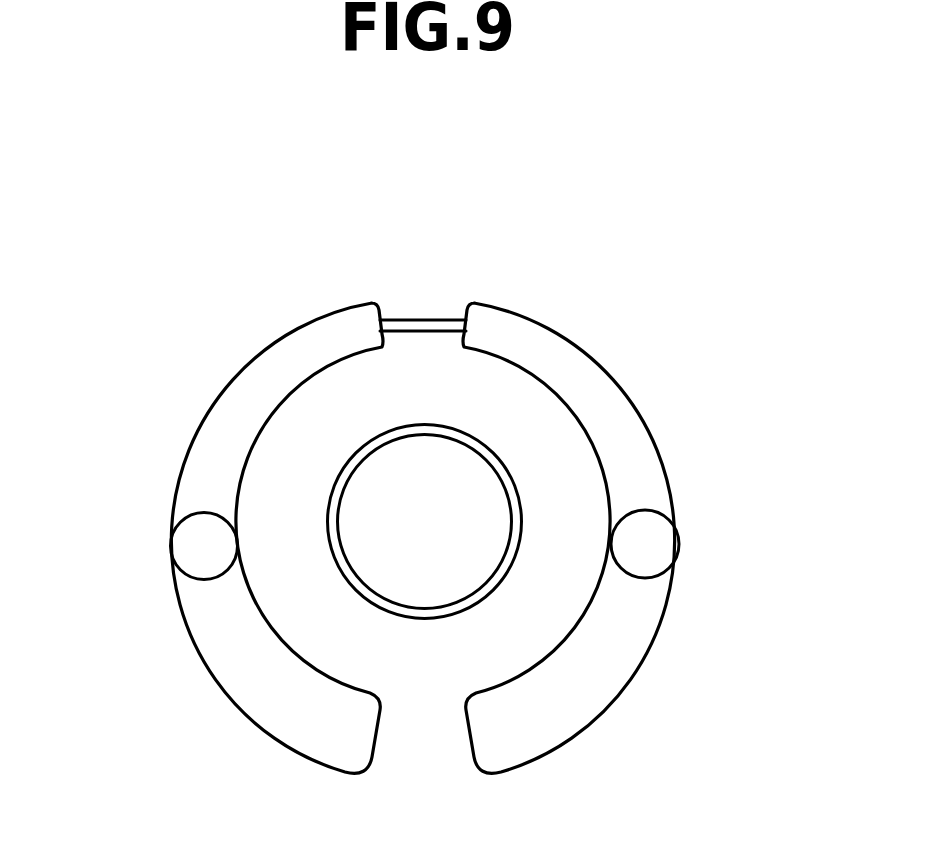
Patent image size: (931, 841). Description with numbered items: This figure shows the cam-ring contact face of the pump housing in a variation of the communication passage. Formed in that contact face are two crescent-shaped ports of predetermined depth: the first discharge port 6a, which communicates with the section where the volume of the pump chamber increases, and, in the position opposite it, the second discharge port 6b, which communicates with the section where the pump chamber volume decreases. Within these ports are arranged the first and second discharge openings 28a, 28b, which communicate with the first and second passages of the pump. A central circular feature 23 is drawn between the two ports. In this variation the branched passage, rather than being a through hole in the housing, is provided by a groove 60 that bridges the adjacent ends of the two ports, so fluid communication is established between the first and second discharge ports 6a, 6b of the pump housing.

The first discharge port 6a is at (197, 480).
The second discharge port 6b is at (642, 475).
The groove 60 is at (422, 319).
The shaft 23 is at (482, 443).
The first discharge opening 28a is at (202, 580).
The second discharge opening 28b is at (643, 580).